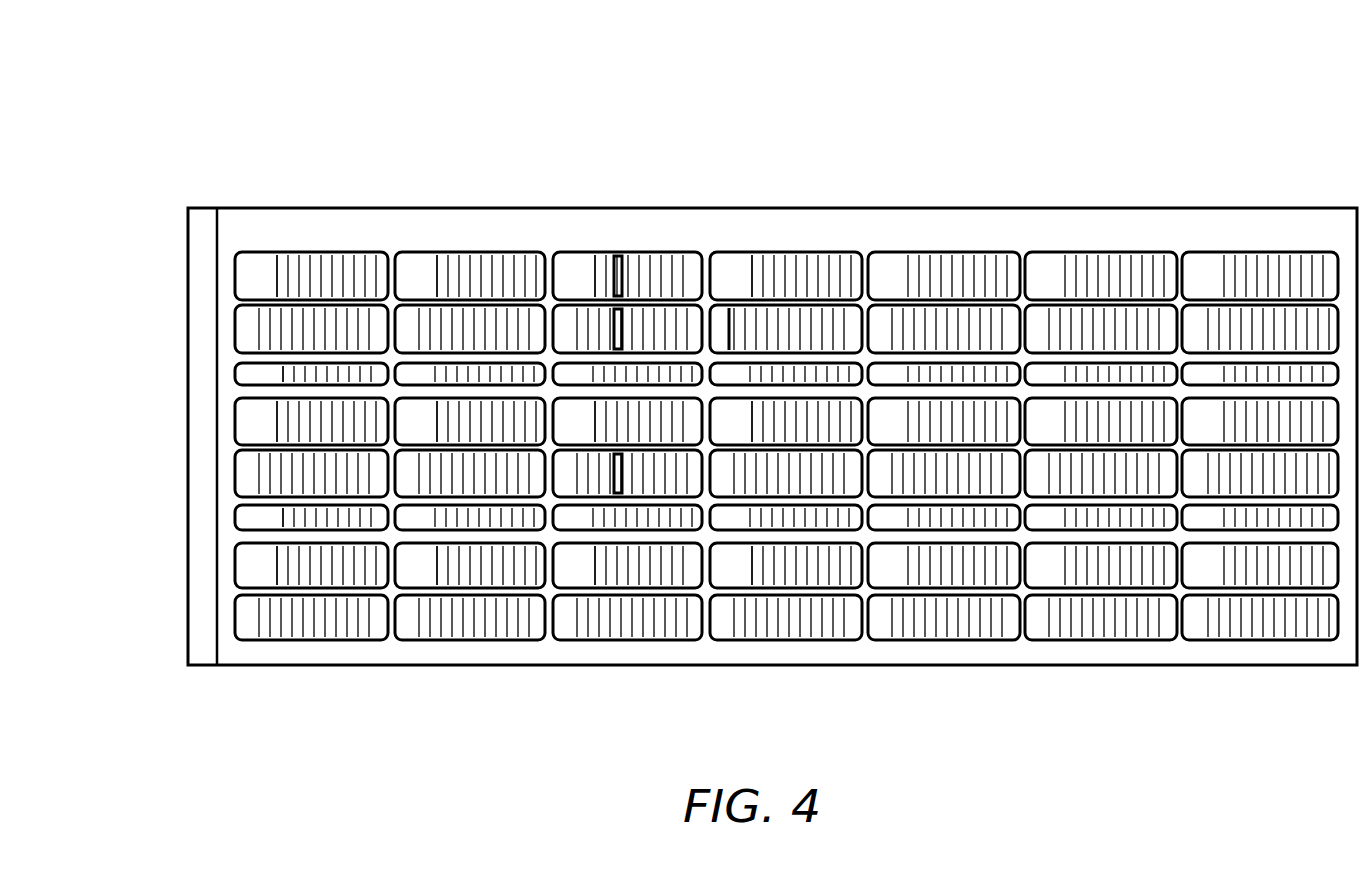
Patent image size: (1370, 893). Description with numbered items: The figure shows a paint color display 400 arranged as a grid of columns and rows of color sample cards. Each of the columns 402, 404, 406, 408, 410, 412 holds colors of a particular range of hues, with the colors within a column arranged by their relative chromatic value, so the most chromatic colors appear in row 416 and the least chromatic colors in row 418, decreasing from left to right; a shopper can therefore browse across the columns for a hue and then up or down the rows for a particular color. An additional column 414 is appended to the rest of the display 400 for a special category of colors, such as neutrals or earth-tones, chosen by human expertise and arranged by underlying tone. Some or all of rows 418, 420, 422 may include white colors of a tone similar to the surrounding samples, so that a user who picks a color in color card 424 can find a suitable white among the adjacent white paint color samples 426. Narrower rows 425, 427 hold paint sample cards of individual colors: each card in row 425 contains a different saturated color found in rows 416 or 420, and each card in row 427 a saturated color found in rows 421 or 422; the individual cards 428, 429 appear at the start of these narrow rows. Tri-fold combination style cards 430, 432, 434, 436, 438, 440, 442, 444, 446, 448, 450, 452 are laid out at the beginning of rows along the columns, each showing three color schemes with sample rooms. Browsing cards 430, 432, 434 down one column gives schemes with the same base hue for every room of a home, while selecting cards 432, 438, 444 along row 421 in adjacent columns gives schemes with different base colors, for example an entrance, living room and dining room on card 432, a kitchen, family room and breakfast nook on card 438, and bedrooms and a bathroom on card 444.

The display 400 is at (746, 118).
The column 402 is at (346, 247).
The column 404 is at (506, 247).
The column 406 is at (668, 248).
The column 408 is at (819, 248).
The column 410 is at (958, 247).
The column 412 is at (1111, 249).
The additional column 414 is at (1266, 249).
The row 416 is at (231, 278).
The row 420 is at (231, 326).
The row 425 is at (231, 377).
The row 421 is at (231, 424).
The row 422 is at (231, 476).
The row 427 is at (229, 518).
The row 418 is at (229, 620).
The color card 424 is at (621, 255).
The white paint color samples 426 is at (623, 326).
The slot group label 428 is at (261, 375).
The slot group label 429 is at (261, 518).
The combination style card 430 is at (272, 285).
The combination style card 432 is at (272, 431).
The combination style card 434 is at (272, 575).
The combination style card 436 is at (432, 285).
The combination style card 438 is at (432, 431).
The combination style card 440 is at (432, 575).
The combination style card 442 is at (590, 285).
The combination style card 444 is at (590, 431).
The combination style card 446 is at (590, 575).
The combination style card 448 is at (747, 285).
The combination style card 450 is at (747, 431).
The combination style card 452 is at (747, 575).